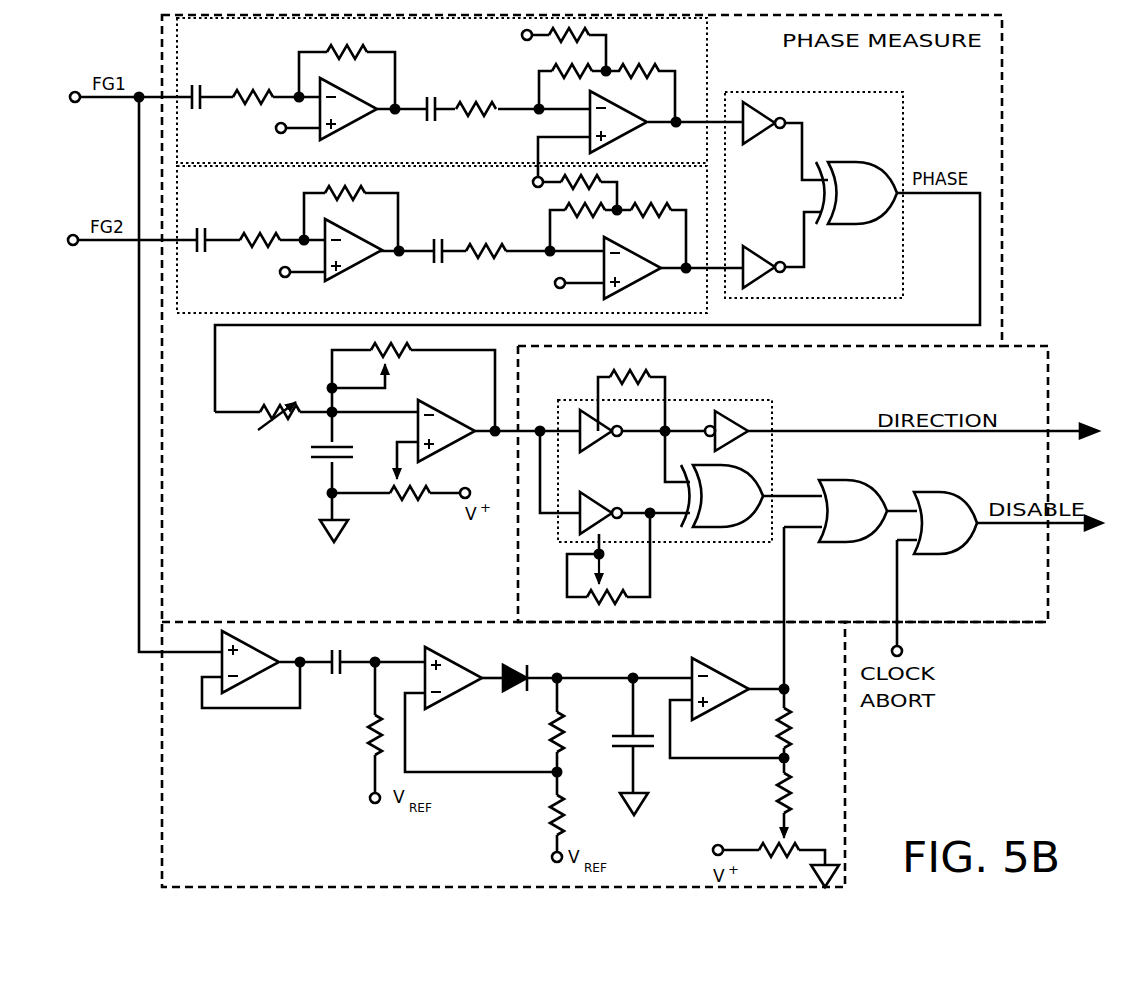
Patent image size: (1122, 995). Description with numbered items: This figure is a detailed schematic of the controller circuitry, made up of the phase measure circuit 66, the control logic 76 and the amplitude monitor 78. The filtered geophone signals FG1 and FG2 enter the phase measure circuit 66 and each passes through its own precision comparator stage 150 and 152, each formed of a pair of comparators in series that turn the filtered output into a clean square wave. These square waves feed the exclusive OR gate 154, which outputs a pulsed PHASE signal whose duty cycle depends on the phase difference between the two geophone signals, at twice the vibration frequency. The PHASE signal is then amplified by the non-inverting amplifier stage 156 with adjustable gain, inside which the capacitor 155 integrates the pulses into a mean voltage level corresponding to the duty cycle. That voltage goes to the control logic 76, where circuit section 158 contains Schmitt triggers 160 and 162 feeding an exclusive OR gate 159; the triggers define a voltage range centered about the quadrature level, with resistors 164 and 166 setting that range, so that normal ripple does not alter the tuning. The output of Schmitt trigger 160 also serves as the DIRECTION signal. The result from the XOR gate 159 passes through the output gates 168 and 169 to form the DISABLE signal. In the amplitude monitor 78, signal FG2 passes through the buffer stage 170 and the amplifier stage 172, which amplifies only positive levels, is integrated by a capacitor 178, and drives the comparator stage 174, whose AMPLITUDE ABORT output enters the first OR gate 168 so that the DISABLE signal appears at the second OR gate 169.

The phase measure circuit 66 is at (1002, 182).
The control logic 76 is at (1020, 347).
The amplitude monitor 78 is at (845, 790).
The precision comparator stage 150 is at (177, 56).
The precision comparator stage 152 is at (177, 207).
The exclusive OR gate 154 is at (903, 150).
The capacitor 155 is at (320, 462).
The non-inverting amplifier stage 156 is at (272, 448).
The circuit section 158 is at (710, 402).
The exclusive OR gate 159 is at (742, 503).
The Schmitt trigger 160 is at (585, 416).
The Schmitt trigger 162 is at (588, 493).
The resistor 164 is at (652, 373).
The resistor 166 is at (623, 601).
The first OR gate 168 is at (857, 493).
The second OR gate 169 is at (938, 487).
The buffer stage 170 is at (259, 731).
The amplifier stage 172 is at (530, 654).
The comparator stage 174 is at (693, 800).
The capacitor 178 is at (613, 743).